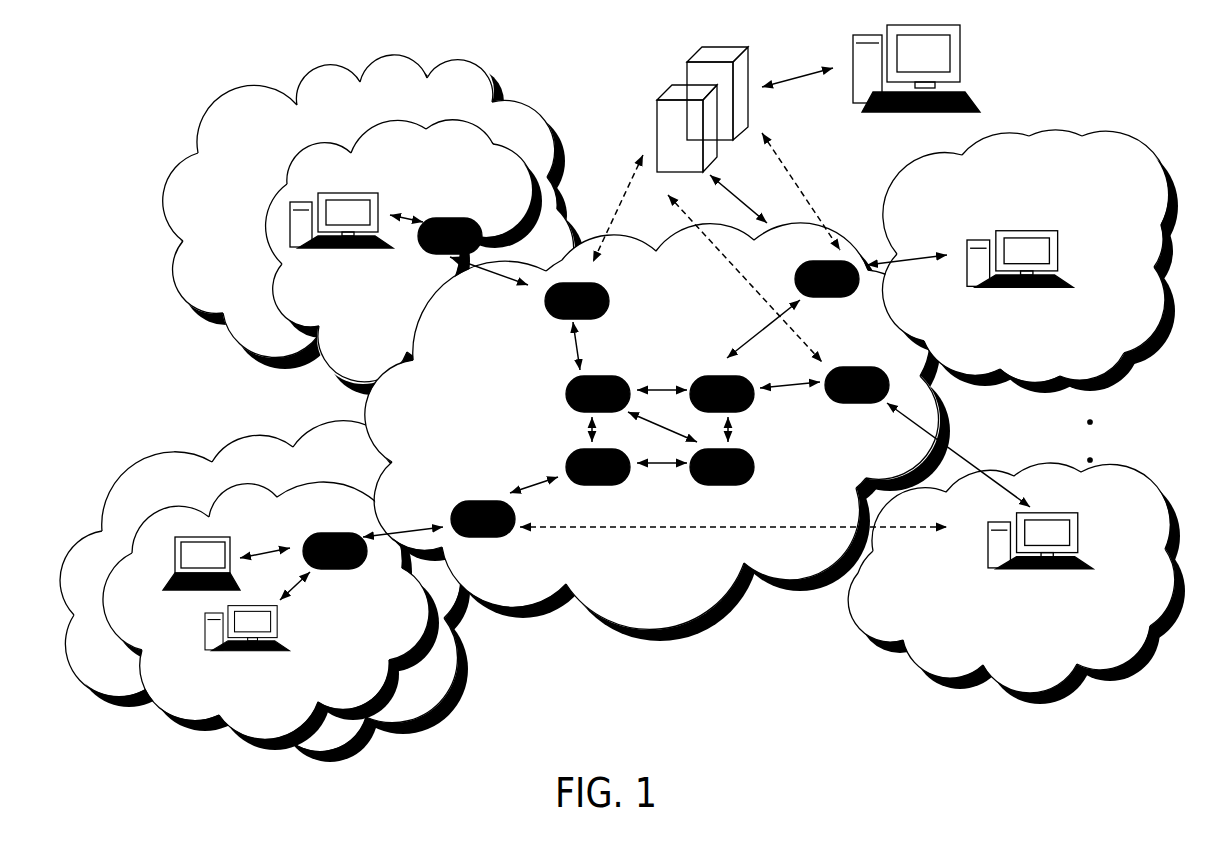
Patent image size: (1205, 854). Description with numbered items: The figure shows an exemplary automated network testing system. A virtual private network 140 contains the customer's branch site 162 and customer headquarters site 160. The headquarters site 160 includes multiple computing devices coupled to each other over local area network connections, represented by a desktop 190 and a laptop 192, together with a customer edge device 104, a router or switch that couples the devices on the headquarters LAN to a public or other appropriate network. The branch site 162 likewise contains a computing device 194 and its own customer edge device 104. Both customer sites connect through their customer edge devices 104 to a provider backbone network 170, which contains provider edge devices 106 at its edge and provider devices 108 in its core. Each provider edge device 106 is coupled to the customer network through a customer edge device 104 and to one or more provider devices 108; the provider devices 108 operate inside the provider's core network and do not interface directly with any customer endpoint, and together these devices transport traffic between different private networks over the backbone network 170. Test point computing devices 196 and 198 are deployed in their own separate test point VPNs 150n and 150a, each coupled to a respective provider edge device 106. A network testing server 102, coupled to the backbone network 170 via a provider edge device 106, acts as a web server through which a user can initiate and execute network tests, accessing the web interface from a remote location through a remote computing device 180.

The network testing server 102 is at (700, 82).
The remote computing device 180 is at (1008, 62).
The virtual private network (VPN) 140 is at (340, 481).
The computing device 194 is at (350, 186).
The customer edge device 104 is at (470, 197).
The branch site 162 is at (372, 341).
The provider edge (PE) device 106 is at (540, 308).
The provider (P) device 108 is at (583, 382).
The provider backbone network 170 is at (642, 604).
The test point VPN 150n is at (1052, 226).
The test point computing device 196 is at (1103, 269).
The test point VPN 150a is at (1020, 664).
The test point computing device 198 is at (1070, 604).
The laptop 192 is at (267, 542).
The desktop 190 is at (193, 647).
The customer headquarters site 160 is at (262, 717).